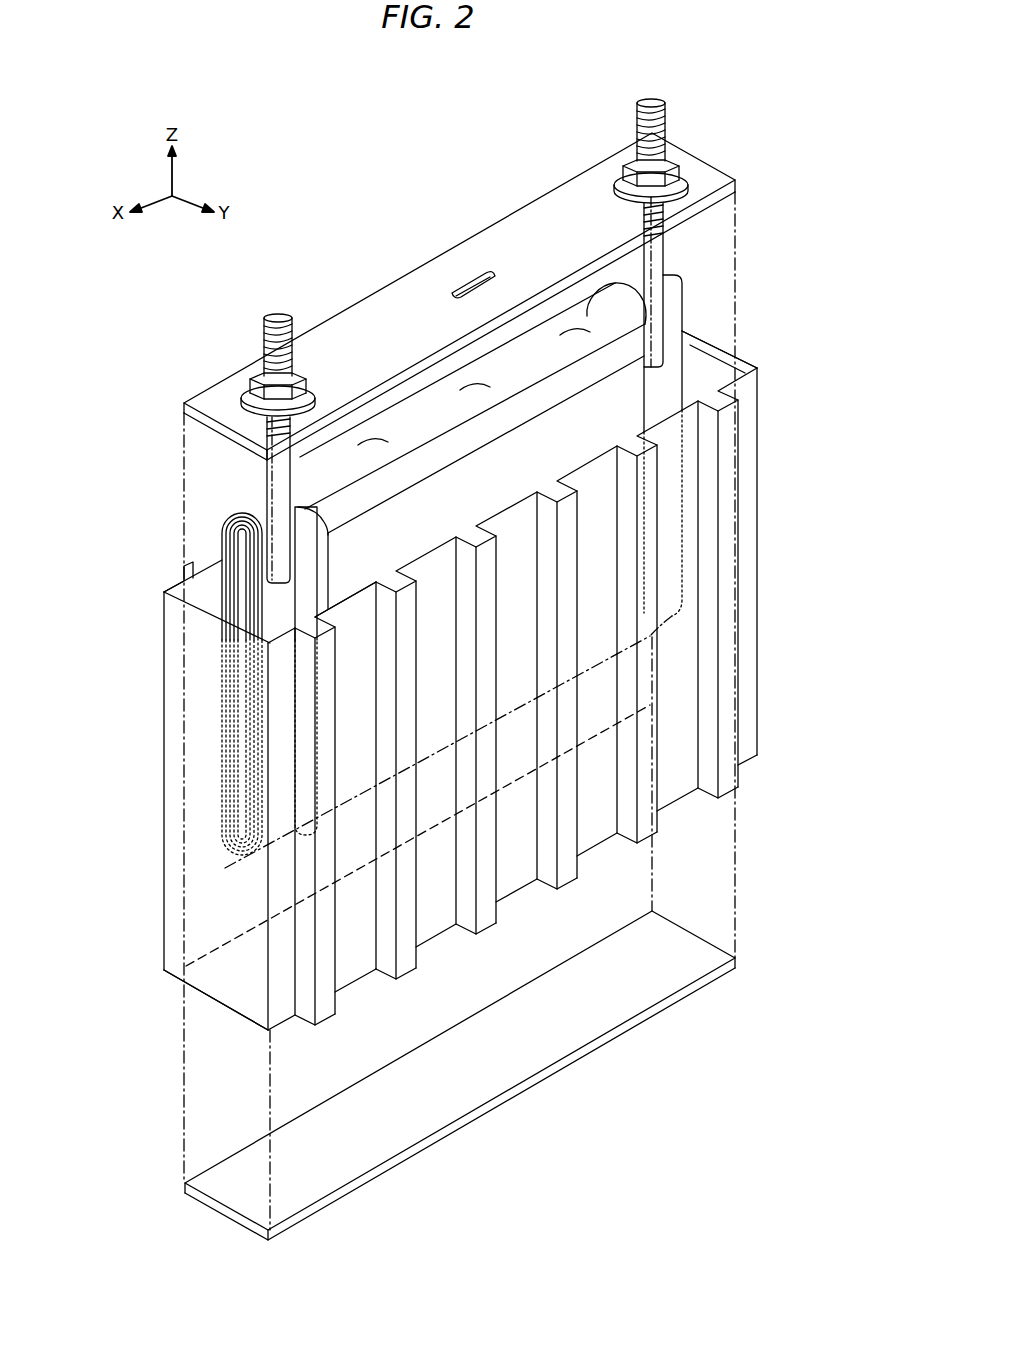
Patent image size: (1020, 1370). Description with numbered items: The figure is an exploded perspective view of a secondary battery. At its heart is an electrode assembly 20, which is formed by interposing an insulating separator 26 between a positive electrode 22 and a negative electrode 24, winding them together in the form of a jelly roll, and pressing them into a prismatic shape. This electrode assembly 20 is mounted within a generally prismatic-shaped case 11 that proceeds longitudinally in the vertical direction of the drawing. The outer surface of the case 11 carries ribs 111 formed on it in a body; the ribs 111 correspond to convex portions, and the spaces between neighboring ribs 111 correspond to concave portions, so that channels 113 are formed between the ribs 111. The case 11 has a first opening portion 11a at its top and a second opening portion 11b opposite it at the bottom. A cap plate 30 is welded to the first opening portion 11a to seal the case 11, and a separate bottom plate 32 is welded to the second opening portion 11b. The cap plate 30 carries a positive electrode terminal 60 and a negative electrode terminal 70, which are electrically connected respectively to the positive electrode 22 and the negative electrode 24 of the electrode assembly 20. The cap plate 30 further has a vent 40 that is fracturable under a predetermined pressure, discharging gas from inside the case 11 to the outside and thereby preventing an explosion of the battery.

The case 11 is at (471, 695).
The opening portion 11a is at (690, 360).
The second opening portion 11b is at (235, 1000).
The ribs 111 is at (312, 1022).
The channels 113 is at (365, 988).
The electrode assembly 20 is at (708, 276).
The positive electrode 22 is at (292, 594).
The negative electrode 24 is at (670, 383).
The insulating separator 26 is at (373, 533).
The cap plate 30 is at (503, 228).
The bottom plate 32 is at (476, 1085).
The vent 40 is at (466, 281).
The positive electrode terminal 60 is at (277, 318).
The negative electrode terminal 70 is at (651, 104).